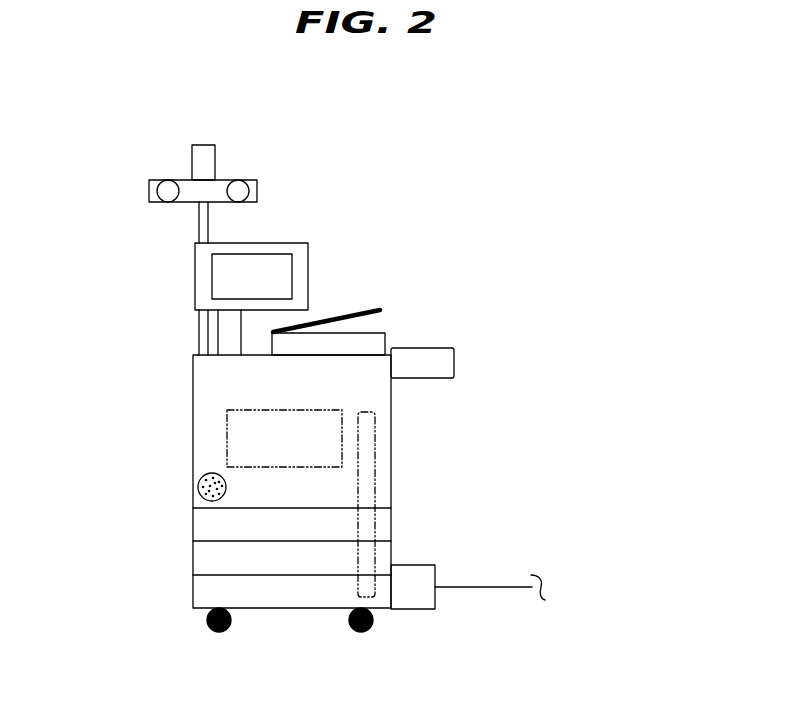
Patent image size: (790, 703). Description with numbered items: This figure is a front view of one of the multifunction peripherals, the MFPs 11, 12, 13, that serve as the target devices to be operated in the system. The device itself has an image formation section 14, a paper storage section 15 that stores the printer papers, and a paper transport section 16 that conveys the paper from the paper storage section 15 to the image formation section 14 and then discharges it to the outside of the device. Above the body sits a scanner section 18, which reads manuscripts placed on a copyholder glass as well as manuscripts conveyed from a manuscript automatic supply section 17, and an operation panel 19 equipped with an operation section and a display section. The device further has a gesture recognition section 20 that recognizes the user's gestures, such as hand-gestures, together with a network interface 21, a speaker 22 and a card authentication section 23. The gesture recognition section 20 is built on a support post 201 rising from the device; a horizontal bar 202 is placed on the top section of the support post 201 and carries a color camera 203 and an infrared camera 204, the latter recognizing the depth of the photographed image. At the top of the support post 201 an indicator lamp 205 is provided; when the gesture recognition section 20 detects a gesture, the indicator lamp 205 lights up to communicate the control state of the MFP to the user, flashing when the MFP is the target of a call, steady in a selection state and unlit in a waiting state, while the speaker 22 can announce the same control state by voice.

The MFP 11 is at (559, 147).
The MFP 12 is at (292, 493).
The MFP 13 is at (292, 493).
The image formation section 14 is at (228, 447).
The paper storage section 15 is at (167, 502).
The paper transport section 16 is at (368, 486).
The manuscript automatic supply section 17 is at (378, 308).
The scanner section 18 is at (382, 347).
The operation panel 19 is at (314, 246).
The gesture recognition section 20 is at (92, 146).
The network interface 21 is at (420, 611).
The speaker 22 is at (212, 487).
The card authentication section 23 is at (432, 378).
The support post 201 is at (197, 331).
The horizontal bar 202 is at (185, 181).
The color camera 203 is at (167, 200).
The infrared camera 204 is at (241, 187).
The indicator lamp 205 is at (208, 156).